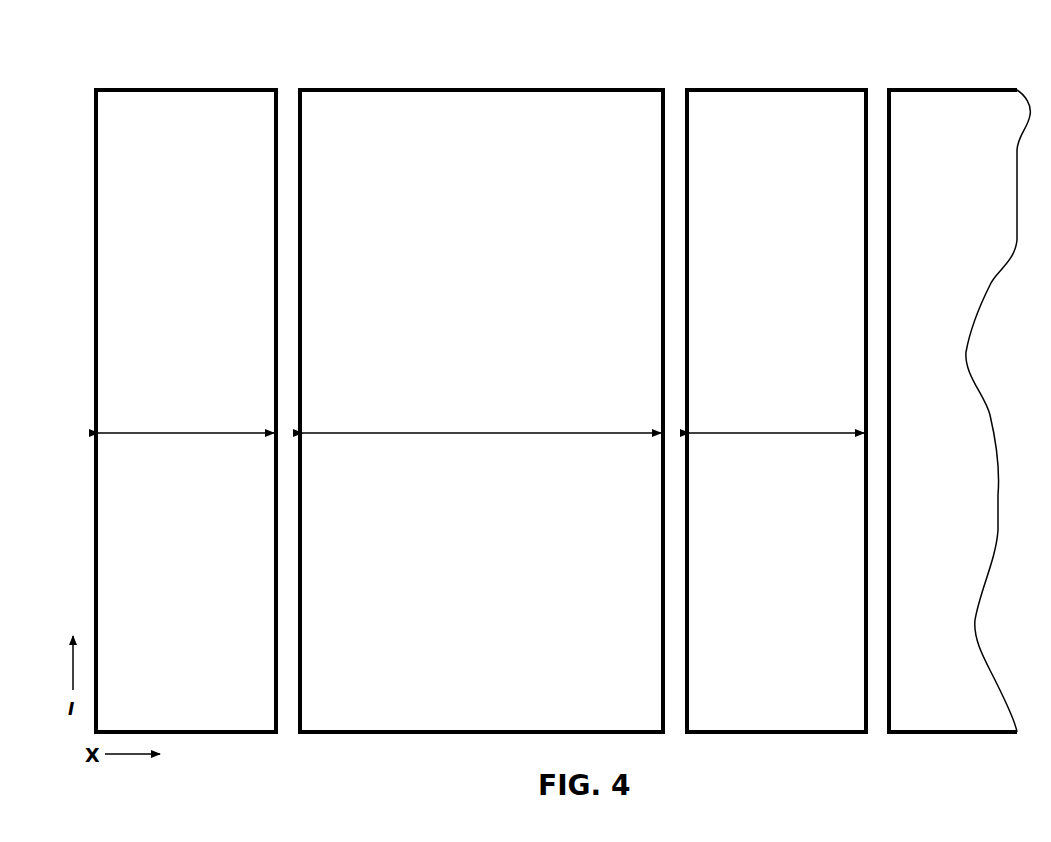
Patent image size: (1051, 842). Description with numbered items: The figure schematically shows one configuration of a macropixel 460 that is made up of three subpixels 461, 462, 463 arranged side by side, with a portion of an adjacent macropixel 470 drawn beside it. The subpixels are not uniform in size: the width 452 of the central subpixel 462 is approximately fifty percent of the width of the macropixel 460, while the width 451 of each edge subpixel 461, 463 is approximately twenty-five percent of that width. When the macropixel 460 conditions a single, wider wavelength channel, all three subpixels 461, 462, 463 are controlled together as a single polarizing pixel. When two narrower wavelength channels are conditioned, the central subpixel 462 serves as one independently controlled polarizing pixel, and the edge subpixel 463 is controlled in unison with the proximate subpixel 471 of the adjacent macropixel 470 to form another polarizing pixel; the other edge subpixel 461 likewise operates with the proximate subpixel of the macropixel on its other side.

The width of subpixels 451 is at (152, 433).
The width of subpixel 452 is at (435, 433).
The macropixel 460 is at (782, 58).
The subpixel 461 is at (212, 734).
The subpixel 462 is at (528, 88).
The subpixel 463 is at (770, 735).
The adjacent macropixel 470 is at (975, 58).
The subpixel of adjacent macropixel 471 is at (985, 734).